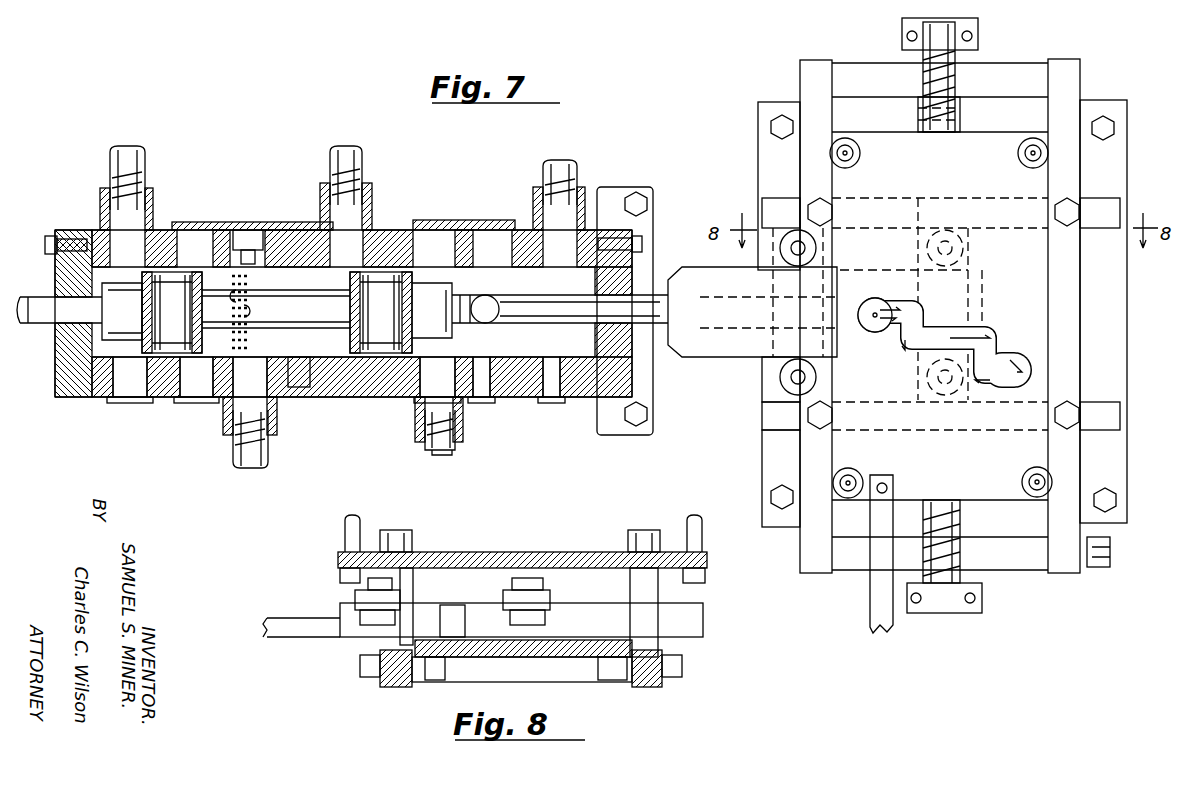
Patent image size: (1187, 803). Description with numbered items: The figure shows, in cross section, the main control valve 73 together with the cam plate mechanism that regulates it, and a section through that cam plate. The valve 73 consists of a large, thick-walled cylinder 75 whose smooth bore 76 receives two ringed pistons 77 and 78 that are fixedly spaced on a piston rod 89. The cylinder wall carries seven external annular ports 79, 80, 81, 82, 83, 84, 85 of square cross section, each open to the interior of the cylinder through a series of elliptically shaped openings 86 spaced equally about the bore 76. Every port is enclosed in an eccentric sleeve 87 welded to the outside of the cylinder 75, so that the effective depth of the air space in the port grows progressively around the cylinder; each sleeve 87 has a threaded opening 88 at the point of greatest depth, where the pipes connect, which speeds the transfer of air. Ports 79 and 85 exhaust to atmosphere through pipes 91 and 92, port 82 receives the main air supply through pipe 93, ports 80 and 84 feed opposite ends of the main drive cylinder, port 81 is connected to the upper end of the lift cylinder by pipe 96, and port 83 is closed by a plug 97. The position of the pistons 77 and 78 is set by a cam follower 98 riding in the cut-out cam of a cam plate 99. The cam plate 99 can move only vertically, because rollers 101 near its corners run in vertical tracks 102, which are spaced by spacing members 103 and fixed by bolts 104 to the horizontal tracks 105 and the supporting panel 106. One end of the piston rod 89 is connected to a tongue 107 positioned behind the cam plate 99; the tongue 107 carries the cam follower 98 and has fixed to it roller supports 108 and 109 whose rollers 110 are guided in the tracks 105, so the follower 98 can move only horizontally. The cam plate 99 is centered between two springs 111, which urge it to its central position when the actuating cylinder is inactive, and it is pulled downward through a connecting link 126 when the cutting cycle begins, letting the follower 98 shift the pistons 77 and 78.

In FIG. 7, the valve 73 is at (438, 208).
In FIG. 7, the cylinder 75 is at (290, 224).
In FIG. 7, the bore 76 is at (300, 385).
In FIG. 7, the piston 77 is at (168, 290).
In FIG. 7, the piston 78 is at (380, 290).
In FIG. 7, the port 79 is at (130, 388).
In FIG. 7, the port 80 is at (200, 388).
In FIG. 7, the port 81 is at (248, 236).
In FIG. 7, the port 82 is at (340, 387).
In FIG. 7, the port 83 is at (448, 222).
In FIG. 7, the port 84 is at (492, 385).
In FIG. 7, the port 85 is at (553, 385).
In FIG. 7, the elliptically shaped openings 86 is at (252, 345).
In FIG. 7, the eccentric sleeve 87 is at (100, 195).
In FIG. 7, the threaded opening 88 is at (262, 405).
In FIG. 7, the piston rod 89 is at (535, 308).
In FIG. 7, the pipe 91 is at (110, 163).
In FIG. 7, the pipe 92 is at (577, 170).
In FIG. 7, the pipe 93 is at (362, 165).
In FIG. 7, the pipe 96 is at (240, 468).
In FIG. 7, the plug 97 is at (450, 455).
In FIG. 7, the cam follower 98 is at (866, 322).
In FIG. 8, the cam follower 98 is at (462, 670).
In FIG. 7, the cam plate 99 is at (962, 132).
In FIG. 8, the cam plate 99 is at (527, 660).
In FIG. 7, the rollers 101 is at (860, 153).
In FIG. 8, the rollers 101 is at (432, 675).
In FIG. 7, the vertical tracks 102 is at (800, 472).
In FIG. 8, the vertical tracks 102 is at (380, 678).
In FIG. 7, the spacing members 103 is at (858, 70).
In FIG. 8, the spacing members 103 is at (482, 672).
In FIG. 7, the bolts 104 is at (812, 200).
In FIG. 8, the bolts 104 is at (405, 518).
In FIG. 7, the horizontal tracks 105 is at (1103, 222).
In FIG. 8, the horizontal tracks 105 is at (703, 622).
In FIG. 7, the supporting panel 106 is at (758, 132).
In FIG. 8, the supporting panel 106 is at (530, 536).
In FIG. 7, the tongue 107 is at (690, 350).
In FIG. 8, the tongue 107 is at (290, 632).
In FIG. 7, the roller support 108 is at (775, 385).
In FIG. 8, the roller support 108 is at (355, 598).
In FIG. 7, the roller support 109 is at (925, 248).
In FIG. 8, the roller support 109 is at (550, 597).
In FIG. 7, the rollers 110 is at (948, 232).
In FIG. 8, the rollers 110 is at (510, 612).
In FIG. 7, the springs 111 is at (962, 100).
In FIG. 7, the connecting link 126 is at (868, 640).